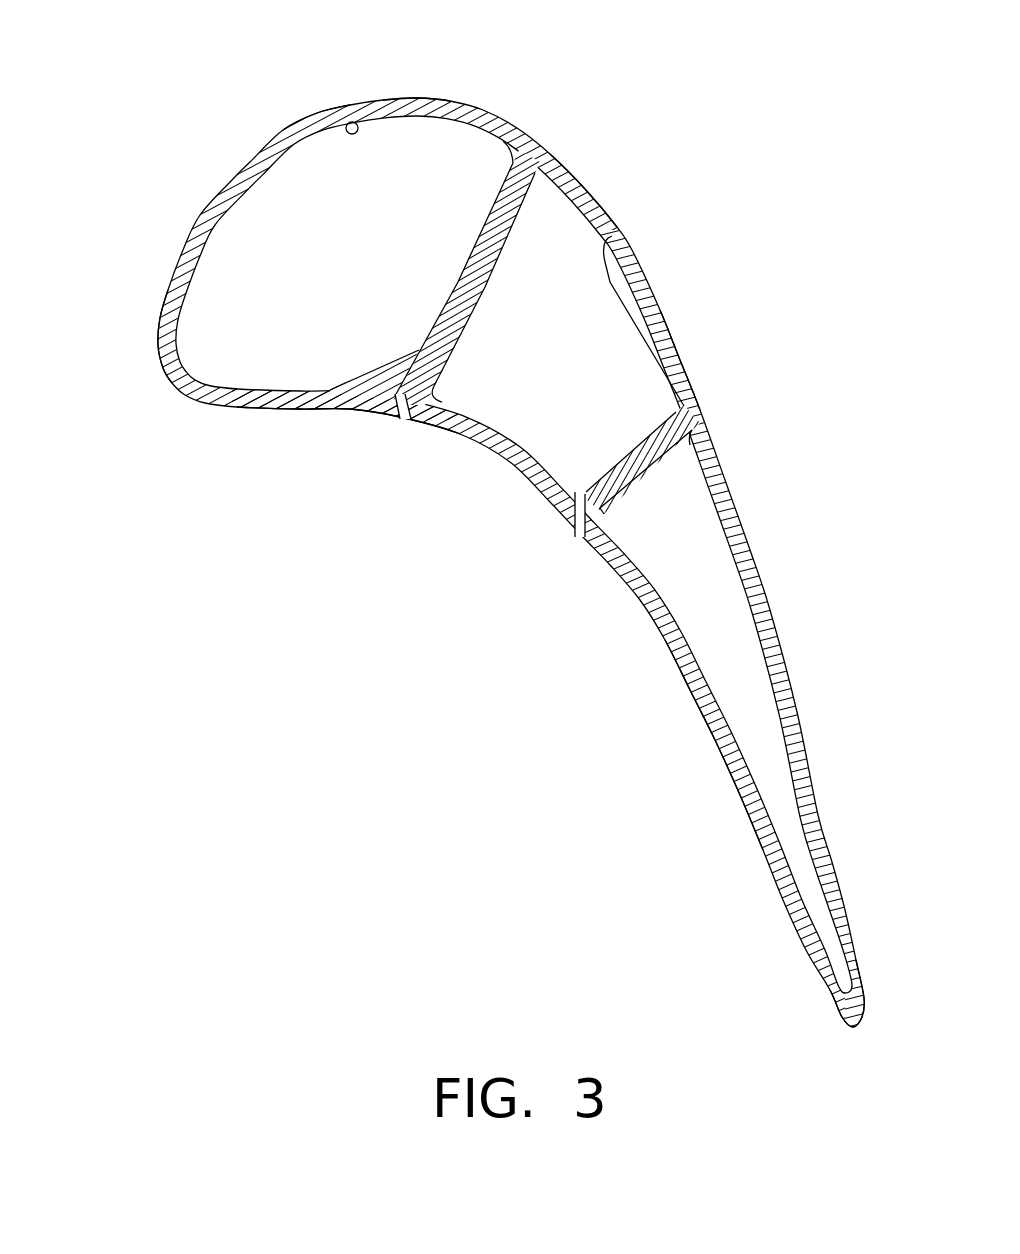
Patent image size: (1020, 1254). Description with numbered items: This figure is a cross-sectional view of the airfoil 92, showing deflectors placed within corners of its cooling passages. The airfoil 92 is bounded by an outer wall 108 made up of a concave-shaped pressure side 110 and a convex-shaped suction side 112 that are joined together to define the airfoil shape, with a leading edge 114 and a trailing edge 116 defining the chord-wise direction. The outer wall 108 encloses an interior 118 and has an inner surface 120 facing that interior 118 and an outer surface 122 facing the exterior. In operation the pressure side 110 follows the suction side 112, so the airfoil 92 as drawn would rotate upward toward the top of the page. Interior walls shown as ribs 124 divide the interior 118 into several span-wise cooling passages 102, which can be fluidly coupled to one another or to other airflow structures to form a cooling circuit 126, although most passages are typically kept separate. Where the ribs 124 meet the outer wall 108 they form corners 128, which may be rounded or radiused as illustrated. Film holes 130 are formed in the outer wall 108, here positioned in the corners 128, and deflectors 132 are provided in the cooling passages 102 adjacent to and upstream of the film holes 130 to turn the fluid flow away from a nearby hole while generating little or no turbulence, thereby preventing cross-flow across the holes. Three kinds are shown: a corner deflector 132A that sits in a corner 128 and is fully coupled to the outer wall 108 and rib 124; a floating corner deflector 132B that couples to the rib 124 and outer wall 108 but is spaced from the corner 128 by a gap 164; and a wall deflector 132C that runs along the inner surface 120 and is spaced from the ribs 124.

The airfoil 92 is at (176, 176).
The cooling passages 102 is at (350, 262).
The outer wall 108 is at (705, 339).
The pressure side 110 is at (682, 676).
The suction side 112 is at (583, 182).
The leading edge 114 is at (168, 380).
The trailing edge 116 is at (854, 1028).
The interior 118 is at (423, 99).
The inner surface 120 is at (357, 122).
The outer surface 122 is at (323, 111).
The ribs 124 is at (494, 268).
The cooling circuit 126 is at (318, 448).
The corners 128 is at (492, 152).
The film holes 130 is at (576, 532).
The deflectors 132 is at (334, 372).
The corner deflector 132A is at (597, 500).
The floating corner deflector 132B is at (404, 393).
The wall deflector 132C is at (615, 268).
The gap 164 is at (376, 367).